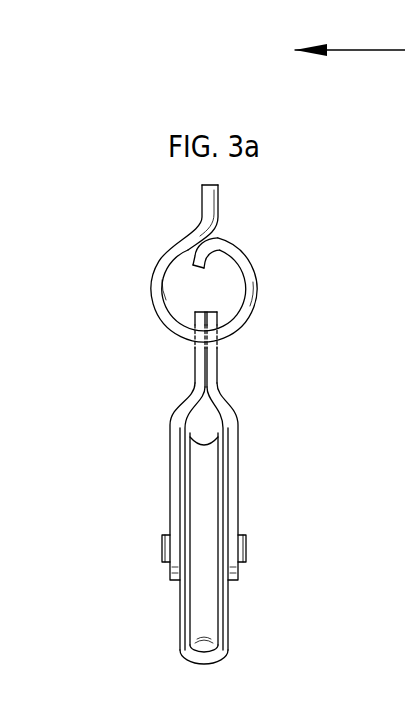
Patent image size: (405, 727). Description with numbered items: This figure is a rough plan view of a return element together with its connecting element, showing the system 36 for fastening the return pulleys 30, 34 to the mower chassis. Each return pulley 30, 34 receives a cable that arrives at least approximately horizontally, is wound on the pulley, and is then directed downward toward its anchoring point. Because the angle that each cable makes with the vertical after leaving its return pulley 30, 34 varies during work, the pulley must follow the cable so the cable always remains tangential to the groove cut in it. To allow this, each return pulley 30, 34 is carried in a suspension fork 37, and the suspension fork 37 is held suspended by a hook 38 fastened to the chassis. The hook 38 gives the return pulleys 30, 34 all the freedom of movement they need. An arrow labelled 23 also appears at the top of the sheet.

The direction of movement arrow 23 is at (372, 50).
The hook 38 is at (254, 303).
The system for fastening the return pulleys 36 is at (227, 366).
The suspension fork 37 is at (172, 468).
The return pulley 30 is at (254, 525).
The return pulley 34 is at (212, 475).